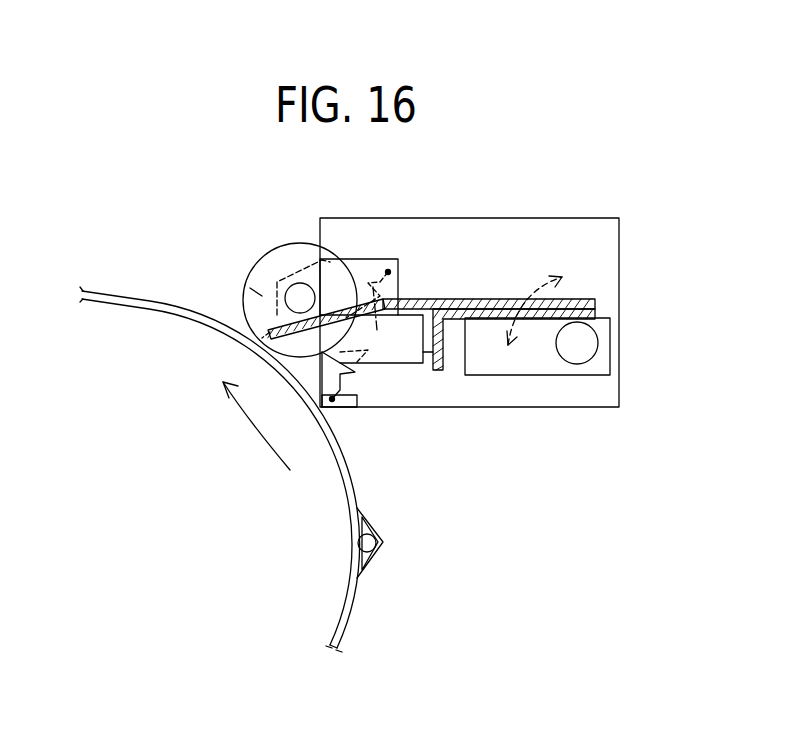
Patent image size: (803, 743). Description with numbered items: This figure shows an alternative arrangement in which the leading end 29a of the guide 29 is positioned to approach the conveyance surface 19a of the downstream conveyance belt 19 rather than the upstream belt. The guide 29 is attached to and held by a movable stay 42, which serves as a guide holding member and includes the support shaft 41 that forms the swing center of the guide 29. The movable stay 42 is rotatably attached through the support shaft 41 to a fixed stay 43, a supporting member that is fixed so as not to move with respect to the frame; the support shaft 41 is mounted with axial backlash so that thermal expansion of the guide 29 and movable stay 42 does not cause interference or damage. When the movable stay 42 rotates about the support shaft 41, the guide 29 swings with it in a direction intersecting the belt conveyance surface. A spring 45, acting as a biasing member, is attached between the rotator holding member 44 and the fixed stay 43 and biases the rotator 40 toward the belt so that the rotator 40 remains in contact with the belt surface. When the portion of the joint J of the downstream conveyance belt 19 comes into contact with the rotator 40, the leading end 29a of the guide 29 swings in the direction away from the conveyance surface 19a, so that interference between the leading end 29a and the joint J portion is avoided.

The downstream conveyance belt 19 is at (118, 289).
The conveyance surface 19a is at (357, 482).
The guide 29 is at (483, 298).
The leading end 29a is at (253, 289).
The rotator 40 is at (275, 262).
The support shaft 41 is at (577, 357).
The movable stay 42 is at (512, 377).
The fixed stay 43 is at (436, 408).
The rotator holding member 44 is at (372, 258).
The spring 45 is at (343, 337).
The joint J is at (403, 558).